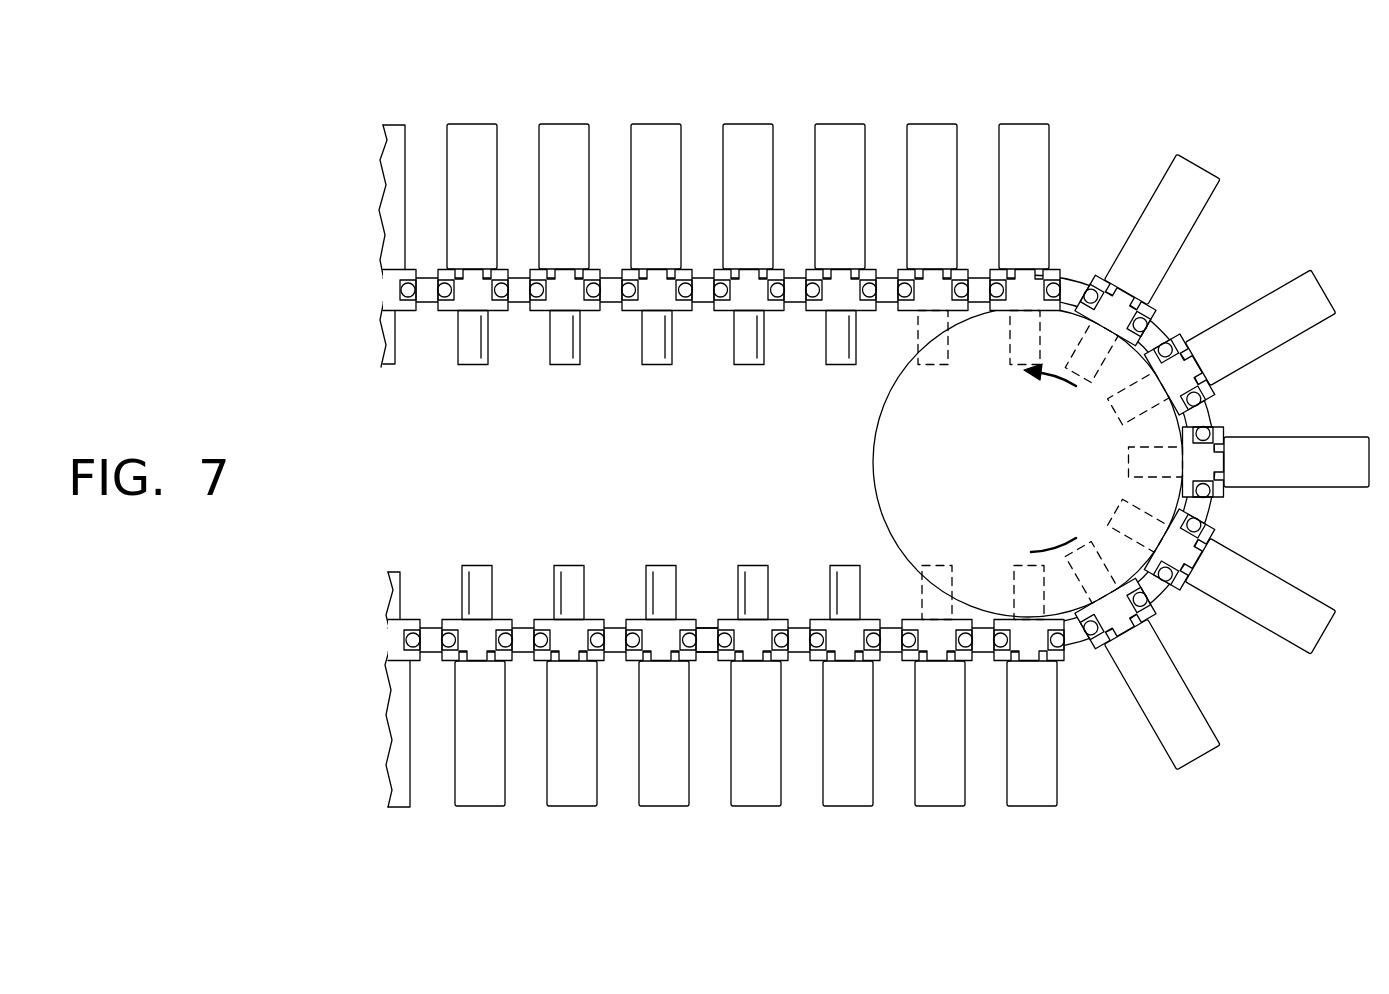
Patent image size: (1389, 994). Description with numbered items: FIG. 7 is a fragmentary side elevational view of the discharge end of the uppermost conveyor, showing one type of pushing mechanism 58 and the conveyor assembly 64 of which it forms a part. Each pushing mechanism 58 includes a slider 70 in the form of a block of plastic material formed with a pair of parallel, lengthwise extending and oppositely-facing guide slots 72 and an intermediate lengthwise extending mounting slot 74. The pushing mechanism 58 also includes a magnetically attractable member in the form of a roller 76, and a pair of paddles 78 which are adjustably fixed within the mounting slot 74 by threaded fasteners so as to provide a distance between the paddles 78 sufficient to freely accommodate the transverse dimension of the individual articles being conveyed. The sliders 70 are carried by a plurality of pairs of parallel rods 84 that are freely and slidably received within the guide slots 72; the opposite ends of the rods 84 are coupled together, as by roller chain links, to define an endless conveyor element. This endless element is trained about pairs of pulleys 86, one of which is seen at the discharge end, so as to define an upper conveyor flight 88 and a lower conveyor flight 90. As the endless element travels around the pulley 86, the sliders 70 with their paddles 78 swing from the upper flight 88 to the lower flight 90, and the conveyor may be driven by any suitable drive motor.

The pushing mechanisms 58 is at (718, 334).
The conveyor chain assembly 64 is at (1180, 105).
The slider 70 is at (730, 622).
The guide slots 72 is at (708, 663).
The mounting slot 74 is at (843, 663).
The roller 76 is at (457, 360).
The paddle 78 is at (568, 127).
The parallel rods 84 is at (818, 305).
The pulleys 86 is at (873, 472).
The upper conveyor flight 88 is at (353, 298).
The lower conveyor flight 90 is at (350, 647).